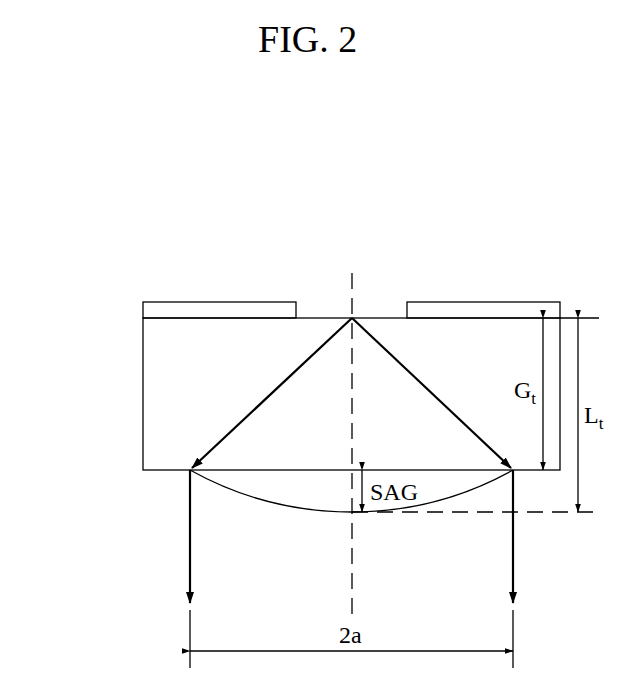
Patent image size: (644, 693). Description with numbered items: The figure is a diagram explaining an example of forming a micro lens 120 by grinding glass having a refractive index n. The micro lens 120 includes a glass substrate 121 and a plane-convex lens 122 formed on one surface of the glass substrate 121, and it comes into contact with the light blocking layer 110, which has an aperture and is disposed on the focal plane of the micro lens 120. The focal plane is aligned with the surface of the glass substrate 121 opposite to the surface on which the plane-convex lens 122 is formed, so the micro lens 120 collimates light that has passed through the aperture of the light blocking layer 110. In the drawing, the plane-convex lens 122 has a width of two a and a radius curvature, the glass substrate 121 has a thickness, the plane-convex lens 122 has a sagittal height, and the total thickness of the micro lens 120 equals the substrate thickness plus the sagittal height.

The light blocking layer 110 is at (487, 302).
The micro lens 120 is at (285, 415).
The glass substrate 121 is at (143, 392).
The plane-convex lens 122 is at (218, 484).